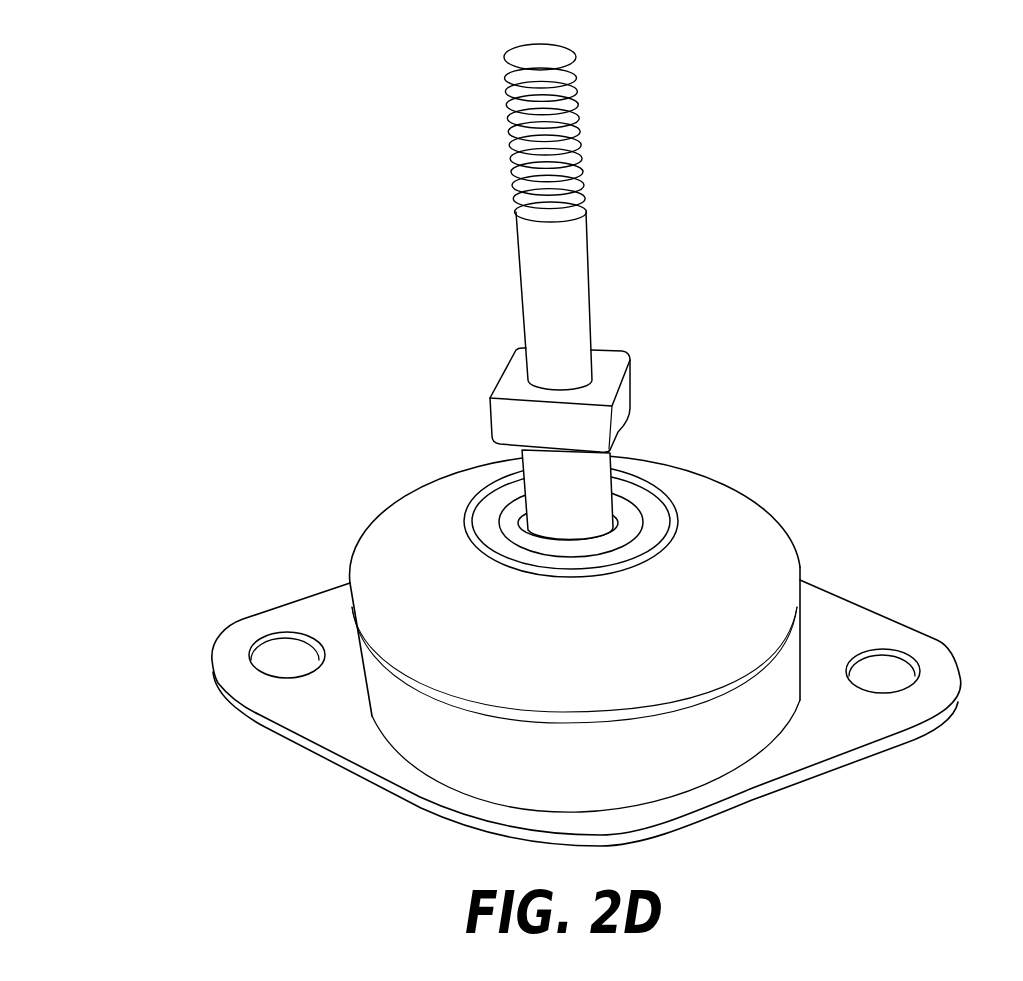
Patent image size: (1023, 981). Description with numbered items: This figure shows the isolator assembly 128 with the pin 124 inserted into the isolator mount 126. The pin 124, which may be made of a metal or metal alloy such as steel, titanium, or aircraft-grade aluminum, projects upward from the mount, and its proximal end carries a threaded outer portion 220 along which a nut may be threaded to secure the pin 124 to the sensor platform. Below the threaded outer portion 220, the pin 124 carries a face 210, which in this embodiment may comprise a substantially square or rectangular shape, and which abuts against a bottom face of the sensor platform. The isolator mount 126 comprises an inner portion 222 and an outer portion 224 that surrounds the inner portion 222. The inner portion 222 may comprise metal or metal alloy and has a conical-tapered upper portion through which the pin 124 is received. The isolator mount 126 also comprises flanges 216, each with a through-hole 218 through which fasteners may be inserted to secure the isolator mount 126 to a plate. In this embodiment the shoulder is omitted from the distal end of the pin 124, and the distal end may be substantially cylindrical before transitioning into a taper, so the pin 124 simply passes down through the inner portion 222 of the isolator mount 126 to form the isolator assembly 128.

The pin 124 is at (559, 414).
The isolator mount 126 is at (591, 740).
The isolator assembly 128 is at (521, 477).
The face 210 is at (612, 373).
The flanges 216 is at (307, 720).
The through-holes 218 is at (263, 641).
The threaded outer portion 220 is at (560, 157).
The inner portion 222 is at (627, 515).
The outer portion 224 is at (773, 545).